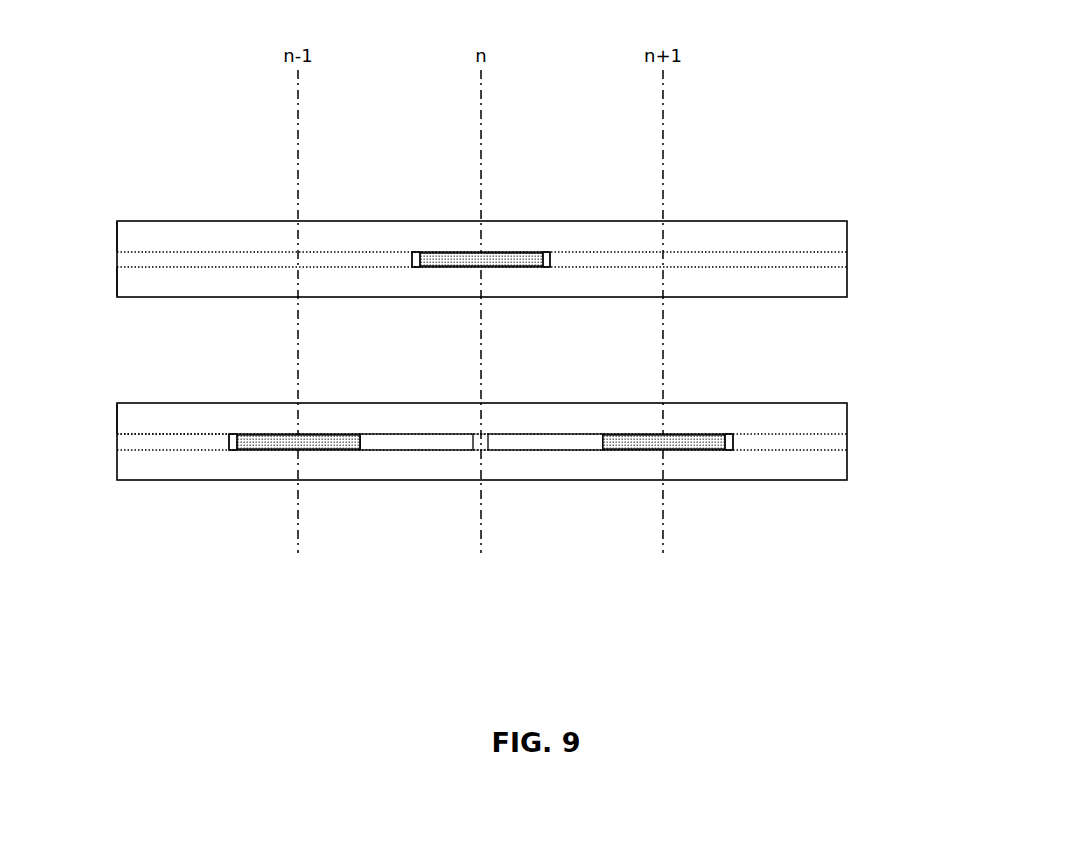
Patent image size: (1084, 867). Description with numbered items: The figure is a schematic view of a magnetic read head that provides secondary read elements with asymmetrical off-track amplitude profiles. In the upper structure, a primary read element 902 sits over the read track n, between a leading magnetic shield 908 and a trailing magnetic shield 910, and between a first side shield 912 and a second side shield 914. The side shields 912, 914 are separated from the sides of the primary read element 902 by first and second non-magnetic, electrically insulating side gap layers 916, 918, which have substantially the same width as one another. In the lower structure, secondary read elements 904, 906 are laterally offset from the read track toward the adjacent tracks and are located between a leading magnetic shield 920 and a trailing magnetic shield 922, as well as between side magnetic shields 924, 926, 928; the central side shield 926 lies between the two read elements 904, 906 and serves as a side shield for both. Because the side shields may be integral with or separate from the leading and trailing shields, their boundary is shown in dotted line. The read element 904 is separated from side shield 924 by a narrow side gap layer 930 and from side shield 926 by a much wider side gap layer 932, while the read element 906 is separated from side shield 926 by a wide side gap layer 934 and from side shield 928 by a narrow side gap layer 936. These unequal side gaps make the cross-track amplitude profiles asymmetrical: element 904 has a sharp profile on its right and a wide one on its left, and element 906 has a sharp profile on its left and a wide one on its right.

The primary read element 902 is at (503, 259).
The secondary read element 904 is at (667, 443).
The secondary read element 906 is at (263, 442).
The leading magnetic shield 908 is at (236, 281).
The trailing magnetic shield 910 is at (236, 237).
The first side shield 912 is at (832, 260).
The second side shield 914 is at (126, 262).
The first side gap layer 916 is at (548, 268).
The second side gap layer 918 is at (413, 257).
The leading magnetic shield 920 is at (832, 470).
The trailing magnetic shield 922 is at (823, 420).
The side magnetic shield 924 is at (832, 443).
The side magnetic shield 928 is at (130, 443).
The side magnetic shield 926 is at (483, 441).
The side gap layer 930 is at (730, 441).
The side gap layer 932 is at (573, 441).
The side gap layer 934 is at (398, 440).
The side gap layer 936 is at (232, 445).